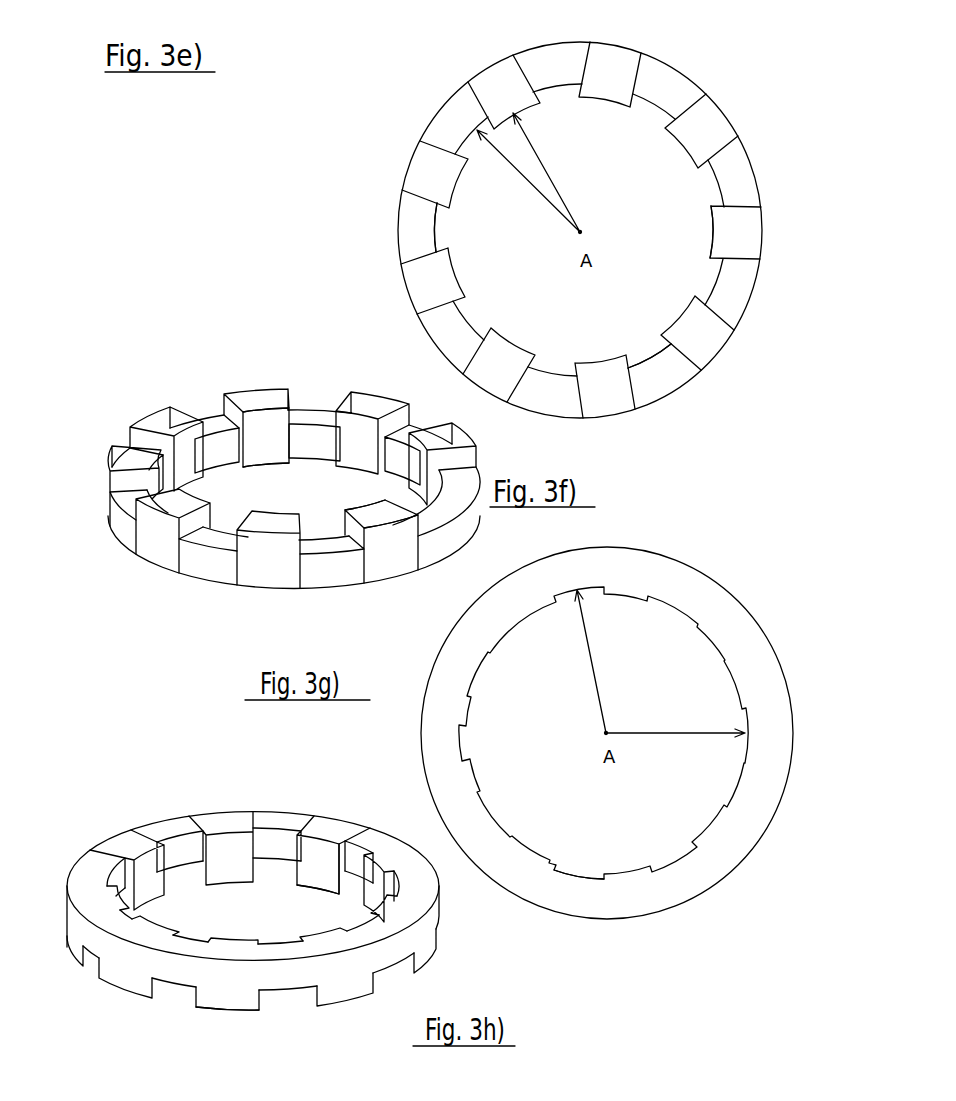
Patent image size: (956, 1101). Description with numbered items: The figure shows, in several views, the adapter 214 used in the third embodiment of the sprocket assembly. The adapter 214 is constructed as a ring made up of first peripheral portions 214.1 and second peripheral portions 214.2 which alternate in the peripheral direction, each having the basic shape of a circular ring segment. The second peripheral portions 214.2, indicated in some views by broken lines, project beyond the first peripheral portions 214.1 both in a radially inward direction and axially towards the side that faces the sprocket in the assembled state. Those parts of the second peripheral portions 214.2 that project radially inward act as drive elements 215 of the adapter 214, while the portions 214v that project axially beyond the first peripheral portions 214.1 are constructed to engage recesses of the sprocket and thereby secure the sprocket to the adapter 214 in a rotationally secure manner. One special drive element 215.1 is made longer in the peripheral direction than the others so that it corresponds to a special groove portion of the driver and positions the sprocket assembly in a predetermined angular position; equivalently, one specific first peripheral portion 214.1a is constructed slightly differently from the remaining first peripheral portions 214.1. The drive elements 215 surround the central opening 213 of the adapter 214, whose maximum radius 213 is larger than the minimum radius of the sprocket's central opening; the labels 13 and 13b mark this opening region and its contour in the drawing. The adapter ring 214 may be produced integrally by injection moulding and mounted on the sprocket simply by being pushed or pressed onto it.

In FIG. 3E, the adapter 214 is at (529, 230).
In FIG. 3F, the adapter 214 is at (265, 495).
In FIG. 3G, the adapter 214 is at (607, 738).
In FIG. 3H, the adapter 214 is at (253, 922).
In FIG. 3E, the first peripheral portions 214.1 is at (670, 84).
In FIG. 3F, the first peripheral portions 214.1 is at (322, 415).
In FIG. 3H, the first peripheral portions 214.1 is at (172, 832).
In FIG. 3E, the specific first peripheral portion 214.1a is at (433, 247).
In FIG. 3E, the second peripheral portions 214.2 is at (607, 78).
In FIG. 3F, the second peripheral portions 214.2 is at (263, 402).
In FIG. 3H, the second peripheral portions 214.2 is at (223, 822).
In FIG. 3F, the axially projecting portions 214v is at (276, 439).
In FIG. 3H, the axially projecting portions 214v is at (242, 1003).
In FIG. 3E, the drive elements 215 is at (718, 233).
In FIG. 3F, the drive elements 215 is at (268, 447).
In FIG. 3H, the drive elements 215 is at (317, 878).
In FIG. 3G, the special drive element 215.1 is at (468, 709).
In FIG. 3E, the opening 13 is at (594, 303).
In FIG. 3E, the inner contour of opening 13b is at (656, 345).
In FIG. 3G, the inner contour of opening 13b is at (584, 862).
In FIG. 3E, the central opening of the adapter 213 is at (530, 208).
In FIG. 3G, the central opening of the adapter 213 is at (660, 678).